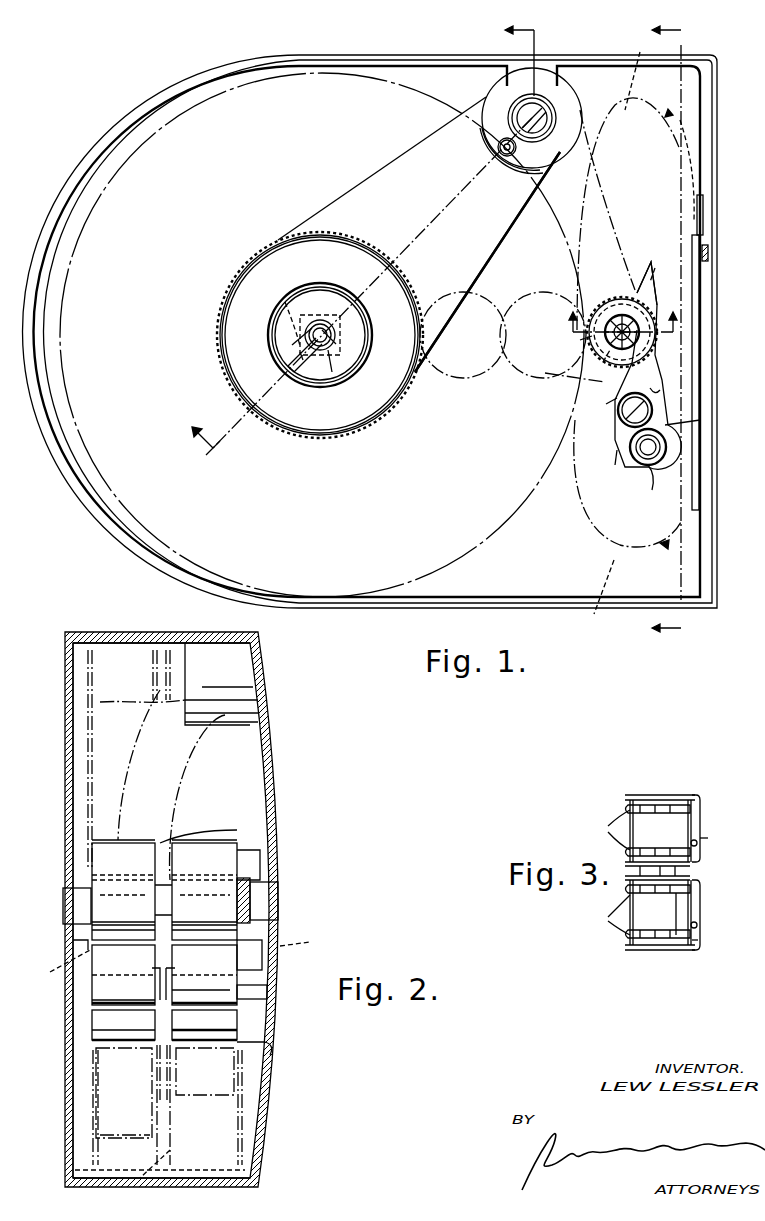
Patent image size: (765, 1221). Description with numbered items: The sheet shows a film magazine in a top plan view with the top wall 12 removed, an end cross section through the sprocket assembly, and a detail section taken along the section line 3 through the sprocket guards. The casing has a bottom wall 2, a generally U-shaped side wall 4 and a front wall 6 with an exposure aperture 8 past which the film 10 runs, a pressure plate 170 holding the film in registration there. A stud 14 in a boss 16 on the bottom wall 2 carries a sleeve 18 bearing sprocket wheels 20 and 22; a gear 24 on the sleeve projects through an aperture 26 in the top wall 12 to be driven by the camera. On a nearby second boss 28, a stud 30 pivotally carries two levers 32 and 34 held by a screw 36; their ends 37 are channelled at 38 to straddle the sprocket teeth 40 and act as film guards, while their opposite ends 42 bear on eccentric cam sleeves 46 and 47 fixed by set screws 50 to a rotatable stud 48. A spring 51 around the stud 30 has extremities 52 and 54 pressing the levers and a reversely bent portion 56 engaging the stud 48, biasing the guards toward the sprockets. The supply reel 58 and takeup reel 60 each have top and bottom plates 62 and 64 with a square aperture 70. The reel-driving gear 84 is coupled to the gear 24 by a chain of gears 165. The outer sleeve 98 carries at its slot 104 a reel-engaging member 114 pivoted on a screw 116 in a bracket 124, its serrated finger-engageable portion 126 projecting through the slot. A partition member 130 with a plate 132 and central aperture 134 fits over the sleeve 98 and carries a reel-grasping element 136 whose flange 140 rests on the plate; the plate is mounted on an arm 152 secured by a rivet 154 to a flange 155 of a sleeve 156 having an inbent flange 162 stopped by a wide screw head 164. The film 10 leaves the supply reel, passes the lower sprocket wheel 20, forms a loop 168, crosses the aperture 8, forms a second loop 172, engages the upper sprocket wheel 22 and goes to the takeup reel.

In FIG. 1, the bottom wall 2 is at (503, 568).
In FIG. 2, the bottom wall 2 is at (273, 786).
In FIG. 1, the section line 3 is at (618, 330).
In FIG. 1, the side wall 4 is at (110, 142).
In FIG. 2, the side wall 4 is at (143, 633).
In FIG. 1, the front wall 6 is at (704, 210).
In FIG. 1, the aperture 8 is at (709, 248).
In FIG. 1, the film 10 is at (610, 84).
In FIG. 2, the film 10 is at (125, 1140).
In FIG. 2, the top wall 12 is at (68, 770).
In FIG. 2, the stud 14 is at (262, 901).
In FIG. 2, the boss 16 is at (255, 879).
In FIG. 2, the sleeve 18 is at (212, 841).
In FIG. 3, the sleeve 18 is at (690, 876).
In FIG. 2, the sprocket wheel 20 is at (260, 856).
In FIG. 3, the sprocket wheel 20 is at (678, 915).
In FIG. 1, the sprocket wheel 22 is at (603, 362).
In FIG. 2, the sprocket wheel 22 is at (92, 870).
In FIG. 3, the sprocket wheel 22 is at (688, 820).
In FIG. 1, the gear 24 is at (613, 312).
In FIG. 2, the gear 24 is at (63, 916).
In FIG. 2, the aperture 26 is at (75, 940).
In FIG. 1, the second boss 28 is at (666, 425).
In FIG. 2, the second boss 28 is at (262, 1046).
In FIG. 2, the stud 30 is at (262, 991).
In FIG. 2, the lever 32 is at (245, 961).
In FIG. 3, the lever 32 is at (700, 937).
In FIG. 1, the lever 34 is at (656, 372).
In FIG. 2, the lever 34 is at (100, 968).
In FIG. 3, the lever 34 is at (702, 838).
In FIG. 1, the screw 36 is at (652, 405).
In FIG. 2, the screw 36 is at (92, 1001).
In FIG. 1, the lever ends 37 is at (649, 311).
In FIG. 2, the lever ends 37 is at (100, 926).
In FIG. 3, the lever ends 37 is at (700, 831).
In FIG. 3, the channel 38 is at (697, 845).
In FIG. 1, the sprocket teeth 40 is at (613, 301).
In FIG. 2, the sprocket teeth 40 is at (50, 972).
In FIG. 3, the sprocket teeth 40 is at (605, 872).
In FIG. 1, the opposite lever ends 42 is at (617, 450).
In FIG. 2, the eccentric cam sleeve 46 is at (228, 1023).
In FIG. 1, the eccentric cam sleeve 47 is at (654, 484).
In FIG. 2, the eccentric cam sleeve 47 is at (95, 1036).
In FIG. 1, the stud 48 is at (650, 446).
In FIG. 2, the stud 48 is at (95, 1026).
In FIG. 1, the set screws 50 is at (636, 466).
In FIG. 2, the set screws 50 is at (128, 1046).
In FIG. 1, the spring 51 is at (617, 398).
In FIG. 2, the spring 51 is at (232, 990).
In FIG. 2, the spring extremity 52 is at (173, 969).
In FIG. 1, the spring extremity 54 is at (663, 383).
In FIG. 2, the spring extremity 54 is at (155, 969).
In FIG. 2, the reversely bent portion 56 is at (164, 1105).
In FIG. 2, the supply reel 58 is at (172, 640).
In FIG. 1, the takeup reel 60 is at (82, 240).
In FIG. 2, the takeup reel 60 is at (76, 641).
In FIG. 1, the top plate 62 is at (210, 244).
In FIG. 2, the top plate 62 is at (92, 1116).
In FIG. 2, the bottom plate 64 is at (281, 1151).
In FIG. 1, the non-circular aperture 70 is at (288, 312).
In FIG. 1, the gear 84 is at (362, 434).
In FIG. 1, the sleeve 98 is at (316, 318).
In FIG. 1, the slot 104 is at (292, 346).
In FIG. 1, the reel-engaging member 114 is at (300, 352).
In FIG. 1, the screw 116 is at (330, 367).
In FIG. 1, the bracket 124 is at (338, 340).
In FIG. 1, the finger-engageable portion 126 is at (290, 362).
In FIG. 1, the partition member 130 is at (278, 240).
In FIG. 1, the plate 132 is at (285, 279).
In FIG. 1, the central aperture 134 is at (330, 318).
In FIG. 1, the reel-grasping element 136 is at (370, 328).
In FIG. 1, the flange 140 is at (358, 309).
In FIG. 1, the arm 152 is at (366, 197).
In FIG. 1, the rivet 154 is at (506, 146).
In FIG. 1, the flange 155 is at (557, 152).
In FIG. 1, the sleeve 156 is at (548, 118).
In FIG. 1, the inbent flange 162 is at (530, 104).
In FIG. 1, the screw head 164 is at (524, 114).
In FIG. 1, the chain of gears 165 is at (528, 378).
In FIG. 1, the film loop 168 is at (657, 127).
In FIG. 2, the film loop 168 is at (100, 702).
In FIG. 1, the pressure plate 170 is at (700, 300).
In FIG. 1, the film loop 172 is at (592, 599).
In FIG. 2, the film loop 172 is at (100, 1135).